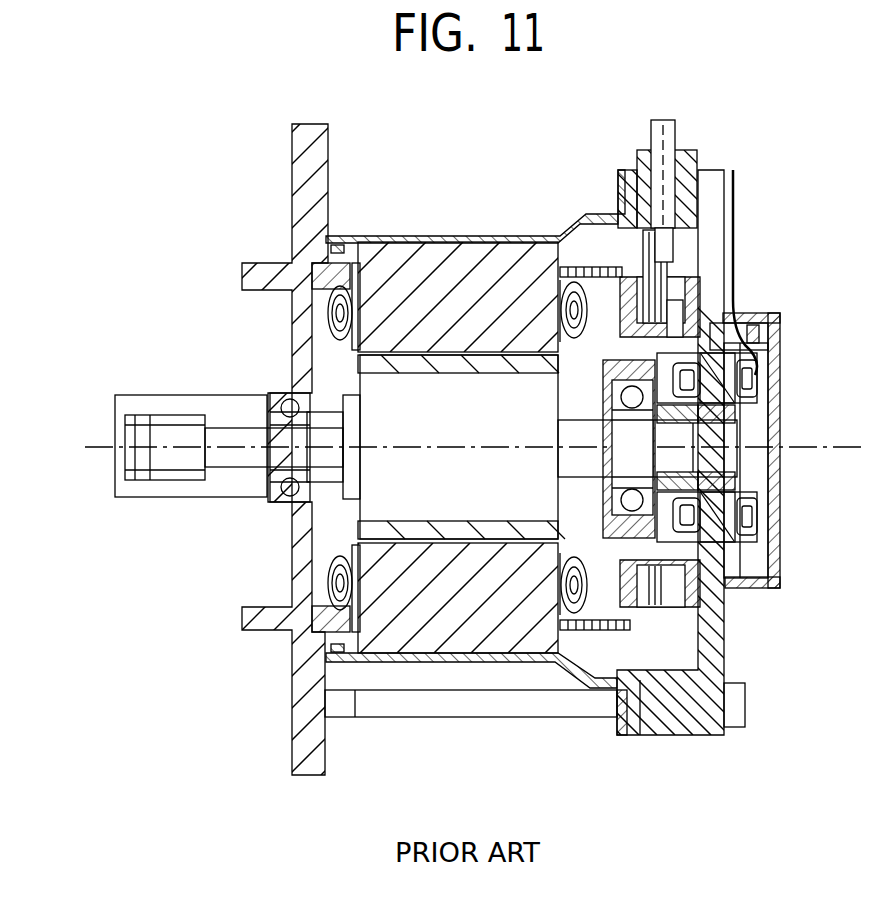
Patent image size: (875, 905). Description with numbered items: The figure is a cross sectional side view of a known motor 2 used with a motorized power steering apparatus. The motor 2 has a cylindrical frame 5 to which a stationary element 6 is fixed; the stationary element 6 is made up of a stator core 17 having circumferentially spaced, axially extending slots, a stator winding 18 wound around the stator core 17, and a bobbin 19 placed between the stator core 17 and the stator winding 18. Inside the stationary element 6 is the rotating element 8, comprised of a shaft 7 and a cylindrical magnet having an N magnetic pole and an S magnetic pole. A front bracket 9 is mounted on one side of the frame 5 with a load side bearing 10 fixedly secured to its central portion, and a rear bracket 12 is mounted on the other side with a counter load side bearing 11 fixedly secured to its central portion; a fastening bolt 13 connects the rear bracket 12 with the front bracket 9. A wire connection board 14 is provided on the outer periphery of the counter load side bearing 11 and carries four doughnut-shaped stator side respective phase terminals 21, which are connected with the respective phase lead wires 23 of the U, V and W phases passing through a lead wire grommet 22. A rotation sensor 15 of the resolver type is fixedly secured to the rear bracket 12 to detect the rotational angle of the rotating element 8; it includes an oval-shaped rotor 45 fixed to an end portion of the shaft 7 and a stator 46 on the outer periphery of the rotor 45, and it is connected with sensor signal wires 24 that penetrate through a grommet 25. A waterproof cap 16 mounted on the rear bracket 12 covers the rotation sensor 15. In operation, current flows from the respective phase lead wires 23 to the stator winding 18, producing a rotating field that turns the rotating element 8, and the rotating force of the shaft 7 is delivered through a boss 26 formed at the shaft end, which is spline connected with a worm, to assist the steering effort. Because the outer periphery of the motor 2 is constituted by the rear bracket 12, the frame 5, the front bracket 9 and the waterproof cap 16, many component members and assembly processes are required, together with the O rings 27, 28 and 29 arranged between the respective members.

The motor 2 is at (245, 135).
The frame 5 is at (500, 237).
The stationary element 6 is at (430, 388).
The shaft 7 is at (328, 473).
The rotating element 8 is at (440, 530).
The front bracket 9 is at (297, 715).
The load side bearing 10 is at (288, 522).
The counter load side bearing 11 is at (640, 562).
The rear bracket 12 is at (690, 738).
The fastening bolt 13 is at (565, 700).
The wire connection board 14 is at (610, 263).
The rotation sensor 15 is at (760, 595).
The waterproof cap 16 is at (755, 447).
The stator core 17 is at (405, 280).
The stator winding 18 is at (342, 290).
The bobbin 19 is at (325, 265).
The stator side respective phase terminals 21 is at (650, 200).
The lead wire grommet 22 is at (692, 152).
The respective phase lead wires 23 is at (668, 130).
The sensor signal wires 24 is at (735, 235).
The grommet 25 is at (742, 325).
The boss 26 is at (165, 395).
The O ring 27 is at (330, 648).
The O ring 28 is at (650, 700).
The O ring 29 is at (778, 338).
The rotor 45 is at (738, 490).
The stator 46 is at (722, 392).